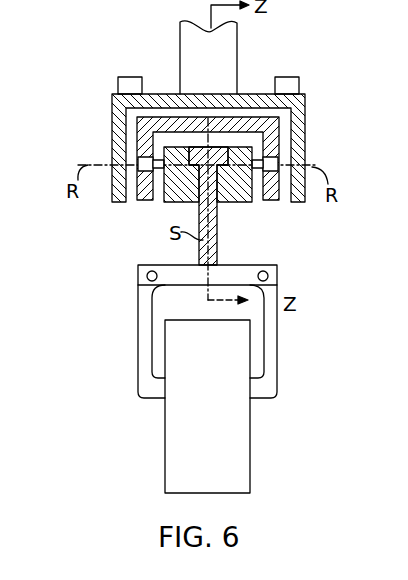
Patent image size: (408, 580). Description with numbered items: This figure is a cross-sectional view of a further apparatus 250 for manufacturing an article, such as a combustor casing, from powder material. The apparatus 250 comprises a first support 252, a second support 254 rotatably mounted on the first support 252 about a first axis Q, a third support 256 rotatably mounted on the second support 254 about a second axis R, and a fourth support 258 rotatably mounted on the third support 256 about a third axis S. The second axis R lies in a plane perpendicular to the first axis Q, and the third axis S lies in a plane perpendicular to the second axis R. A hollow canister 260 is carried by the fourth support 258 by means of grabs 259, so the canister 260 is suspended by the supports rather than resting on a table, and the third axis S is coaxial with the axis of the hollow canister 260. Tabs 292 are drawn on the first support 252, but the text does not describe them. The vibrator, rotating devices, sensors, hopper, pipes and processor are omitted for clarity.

The apparatus 250 is at (345, 165).
The first support 252 is at (120, 150).
The second support 254 is at (243, 128).
The third support 256 is at (176, 198).
The fourth support 258 is at (236, 270).
The grabs 259 is at (268, 333).
The hollow canister 260 is at (232, 417).
The mounting tabs 292 is at (122, 84).